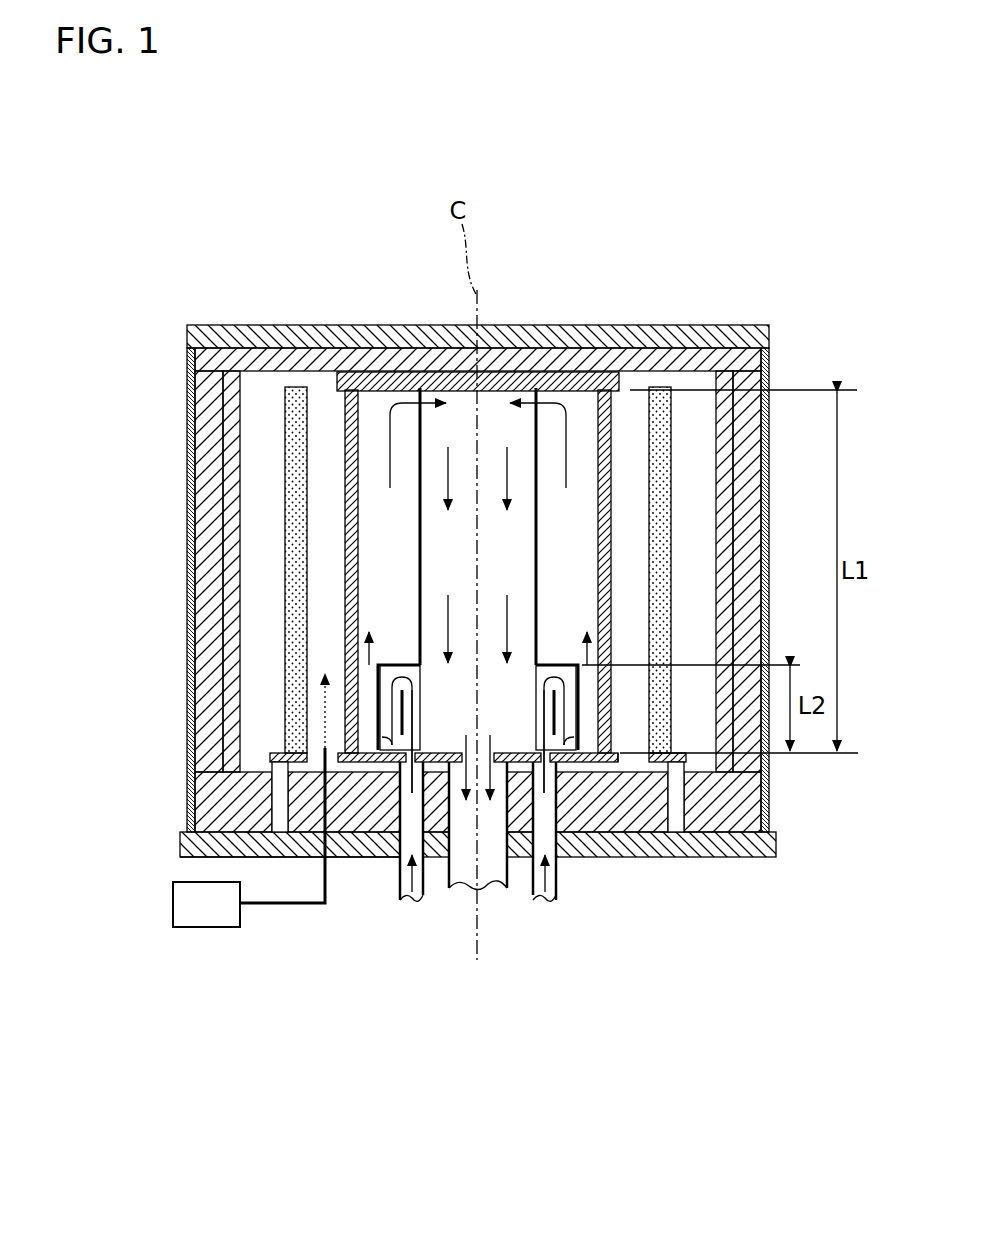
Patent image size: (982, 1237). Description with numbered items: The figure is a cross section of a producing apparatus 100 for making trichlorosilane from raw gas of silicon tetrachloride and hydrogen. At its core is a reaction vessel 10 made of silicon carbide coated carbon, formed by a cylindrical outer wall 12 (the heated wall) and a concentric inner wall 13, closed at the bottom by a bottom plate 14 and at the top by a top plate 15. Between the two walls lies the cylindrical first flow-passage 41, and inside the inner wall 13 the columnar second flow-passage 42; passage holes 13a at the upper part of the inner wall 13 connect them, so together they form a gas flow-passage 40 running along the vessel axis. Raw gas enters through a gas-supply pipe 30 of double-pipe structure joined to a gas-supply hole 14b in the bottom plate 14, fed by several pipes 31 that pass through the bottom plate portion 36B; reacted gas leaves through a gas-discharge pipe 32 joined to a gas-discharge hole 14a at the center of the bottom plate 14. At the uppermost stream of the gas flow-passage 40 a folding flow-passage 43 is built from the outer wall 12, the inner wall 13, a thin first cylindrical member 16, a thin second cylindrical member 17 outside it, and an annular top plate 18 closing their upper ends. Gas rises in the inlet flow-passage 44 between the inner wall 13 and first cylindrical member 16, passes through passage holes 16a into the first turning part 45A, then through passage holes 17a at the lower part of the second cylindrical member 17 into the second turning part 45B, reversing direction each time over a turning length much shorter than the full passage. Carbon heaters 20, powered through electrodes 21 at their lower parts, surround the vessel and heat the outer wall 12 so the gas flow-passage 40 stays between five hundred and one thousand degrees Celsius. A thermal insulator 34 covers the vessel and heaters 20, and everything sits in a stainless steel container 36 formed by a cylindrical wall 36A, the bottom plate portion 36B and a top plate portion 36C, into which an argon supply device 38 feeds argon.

The producing apparatus 100 is at (528, 290).
The reaction vessel 10 is at (420, 504).
The outer wall 12 is at (345, 540).
The inner wall 13 is at (333, 460).
The passage holes 13a is at (497, 355).
The bottom plate 14 is at (470, 885).
The gas-discharge hole 14a is at (466, 737).
The gas-supply hole 14b is at (322, 830).
The top plate 15 is at (590, 325).
The first cylindrical member 16 is at (590, 765).
The passage holes 16a is at (548, 663).
The second cylindrical member 17 is at (688, 765).
The passage holes 17a is at (612, 762).
The annular top plate 18 is at (600, 627).
The heaters 20 is at (662, 535).
The electrodes 21 is at (280, 795).
The gas-supply pipe 30 is at (363, 858).
The pipes 31 is at (425, 890).
The gas-discharge pipe 32 is at (505, 880).
The thermal insulator 34 is at (676, 325).
The container 36 is at (185, 545).
The cylindrical wall 36A is at (190, 395).
The bottom plate portion 36B is at (763, 840).
The top plate portion 36C is at (730, 325).
The argon supply device 38 is at (215, 907).
The gas flow-passage 40 is at (325, 232).
The first flow-passage 41 is at (380, 325).
The second flow-passage 42 is at (445, 325).
The folding flow-passage 43 is at (132, 662).
The inlet flow-passage 44 is at (395, 677).
The first turning part 45A is at (392, 730).
The second turning part 45B is at (378, 737).